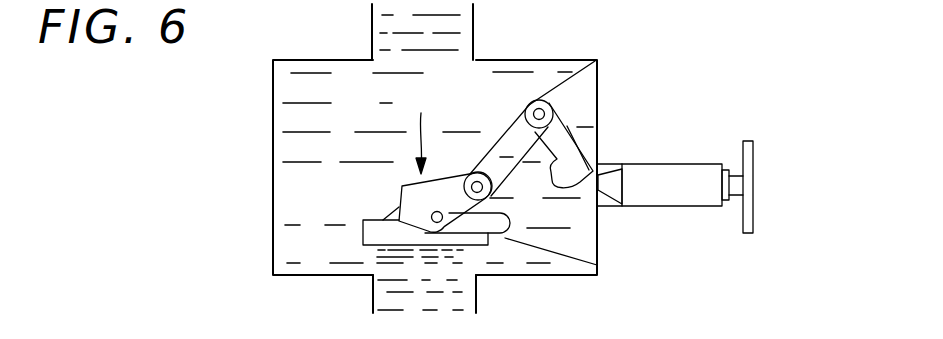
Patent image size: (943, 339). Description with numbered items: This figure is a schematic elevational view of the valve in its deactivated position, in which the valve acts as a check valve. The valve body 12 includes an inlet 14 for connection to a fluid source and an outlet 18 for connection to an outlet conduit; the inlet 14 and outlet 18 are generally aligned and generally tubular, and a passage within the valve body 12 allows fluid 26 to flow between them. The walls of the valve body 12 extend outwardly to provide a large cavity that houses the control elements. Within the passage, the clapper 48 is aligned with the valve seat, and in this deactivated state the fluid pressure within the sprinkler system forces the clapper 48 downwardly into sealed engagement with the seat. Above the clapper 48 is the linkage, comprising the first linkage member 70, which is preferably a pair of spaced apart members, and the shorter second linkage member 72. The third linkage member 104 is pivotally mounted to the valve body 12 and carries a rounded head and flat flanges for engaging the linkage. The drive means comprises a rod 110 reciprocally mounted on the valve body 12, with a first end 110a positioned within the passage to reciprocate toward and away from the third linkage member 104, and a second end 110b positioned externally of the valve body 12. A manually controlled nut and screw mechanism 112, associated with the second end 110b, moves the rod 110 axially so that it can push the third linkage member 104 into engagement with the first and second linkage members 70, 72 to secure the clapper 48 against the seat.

The valve body 12 is at (587, 60).
The inlet 14 is at (477, 300).
The outlet 18 is at (473, 22).
The fluid 26 is at (388, 103).
The clapper 48 is at (378, 231).
The first linkage member 70 is at (503, 161).
The second linkage member 72 is at (397, 198).
The third linkage member 104 is at (528, 130).
The rod 110 is at (686, 190).
The first end of rod 110a is at (612, 180).
The second end of rod 110b is at (712, 165).
The nut and screw mechanism 112 is at (705, 143).